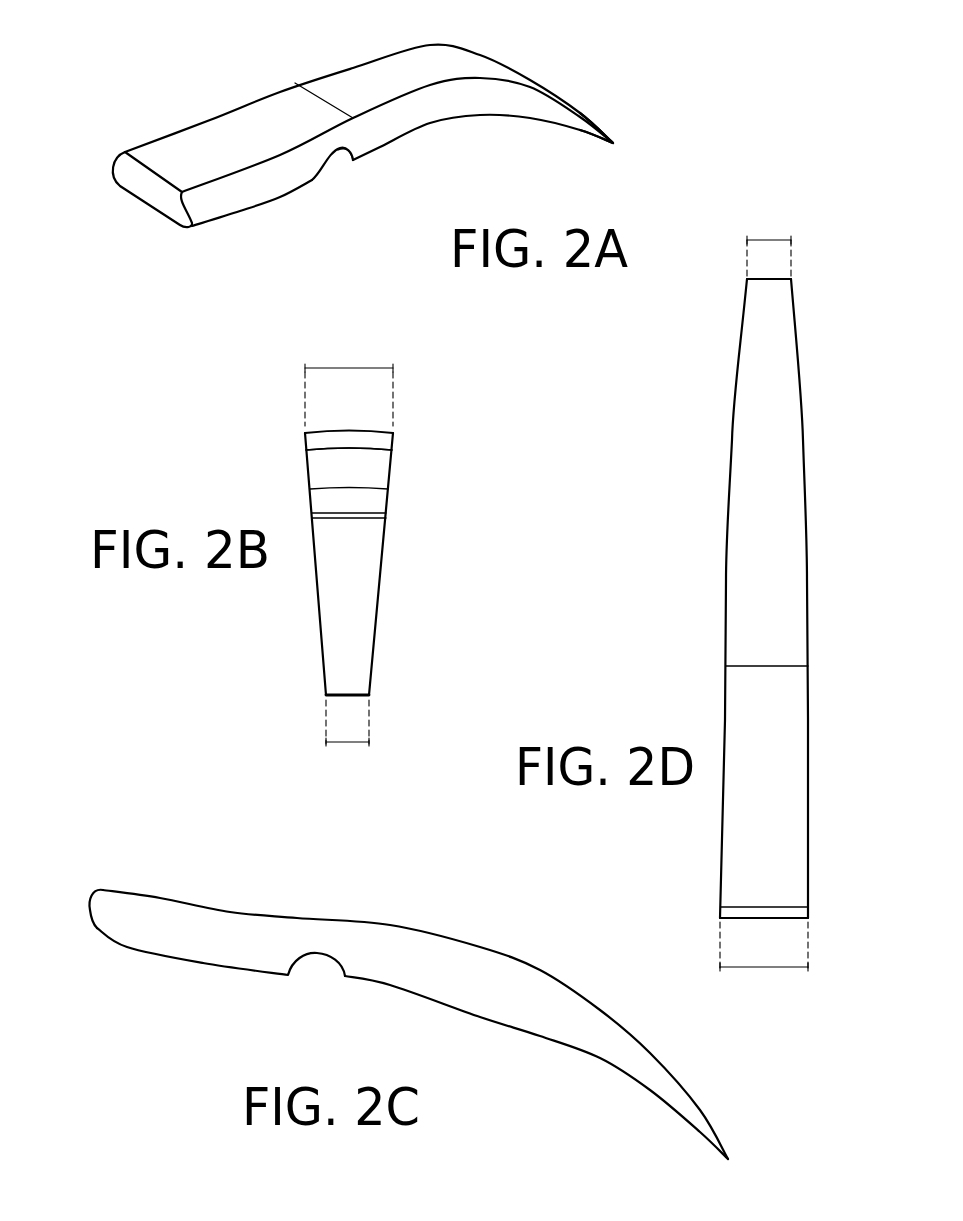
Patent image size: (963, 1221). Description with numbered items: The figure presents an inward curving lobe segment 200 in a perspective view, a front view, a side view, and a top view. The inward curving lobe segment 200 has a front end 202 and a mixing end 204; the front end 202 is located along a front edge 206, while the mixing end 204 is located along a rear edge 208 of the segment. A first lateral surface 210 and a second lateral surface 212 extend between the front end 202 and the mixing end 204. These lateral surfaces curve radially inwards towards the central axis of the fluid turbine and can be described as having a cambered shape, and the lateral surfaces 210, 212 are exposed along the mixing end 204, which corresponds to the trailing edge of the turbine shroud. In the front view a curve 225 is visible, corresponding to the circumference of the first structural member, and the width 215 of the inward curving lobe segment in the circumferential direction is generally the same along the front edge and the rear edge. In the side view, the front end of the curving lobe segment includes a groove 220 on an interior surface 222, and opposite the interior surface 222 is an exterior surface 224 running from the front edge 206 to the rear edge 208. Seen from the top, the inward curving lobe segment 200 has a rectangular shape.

In FIG. 2A, the inward curving lobe segment 200 is at (83, 38).
In FIG. 2B, the inward curving lobe segment 200 is at (187, 423).
In FIG. 2D, the inward curving lobe segment 200 is at (650, 364).
In FIG. 2C, the inward curving lobe segment 200 is at (116, 838).
In FIG. 2A, the front end 202 is at (140, 188).
In FIG. 2B, the front end 202 is at (378, 442).
In FIG. 2D, the front end 202 is at (775, 920).
In FIG. 2C, the front end 202 is at (137, 895).
In FIG. 2A, the mixing end 204 is at (583, 105).
In FIG. 2B, the mixing end 204 is at (358, 685).
In FIG. 2D, the mixing end 204 is at (768, 277).
In FIG. 2C, the mixing end 204 is at (703, 1117).
In FIG. 2C, the front edge 206 is at (95, 928).
In FIG. 2C, the rear edge 208 is at (729, 1158).
In FIG. 2A, the first lateral surface 210 is at (237, 192).
In FIG. 2B, the first lateral surface 210 is at (387, 503).
In FIG. 2D, the first lateral surface 210 is at (808, 590).
In FIG. 2C, the first lateral surface 210 is at (448, 963).
In FIG. 2B, the second lateral surface 212 is at (320, 635).
In FIG. 2D, the second lateral surface 212 is at (726, 583).
In FIG. 2B, the width 215 is at (349, 555).
In FIG. 2D, the width 215 is at (764, 601).
In FIG. 2A, the groove 220 is at (332, 165).
In FIG. 2B, the groove 220 is at (367, 517).
In FIG. 2C, the groove 220 is at (318, 973).
In FIG. 2A, the interior surface 222 is at (517, 118).
In FIG. 2B, the interior surface 222 is at (353, 625).
In FIG. 2C, the interior surface 222 is at (497, 1013).
In FIG. 2A, the exterior surface 224 is at (193, 147).
In FIG. 2C, the exterior surface 224 is at (302, 917).
In FIG. 2B, the curve 225 is at (333, 448).